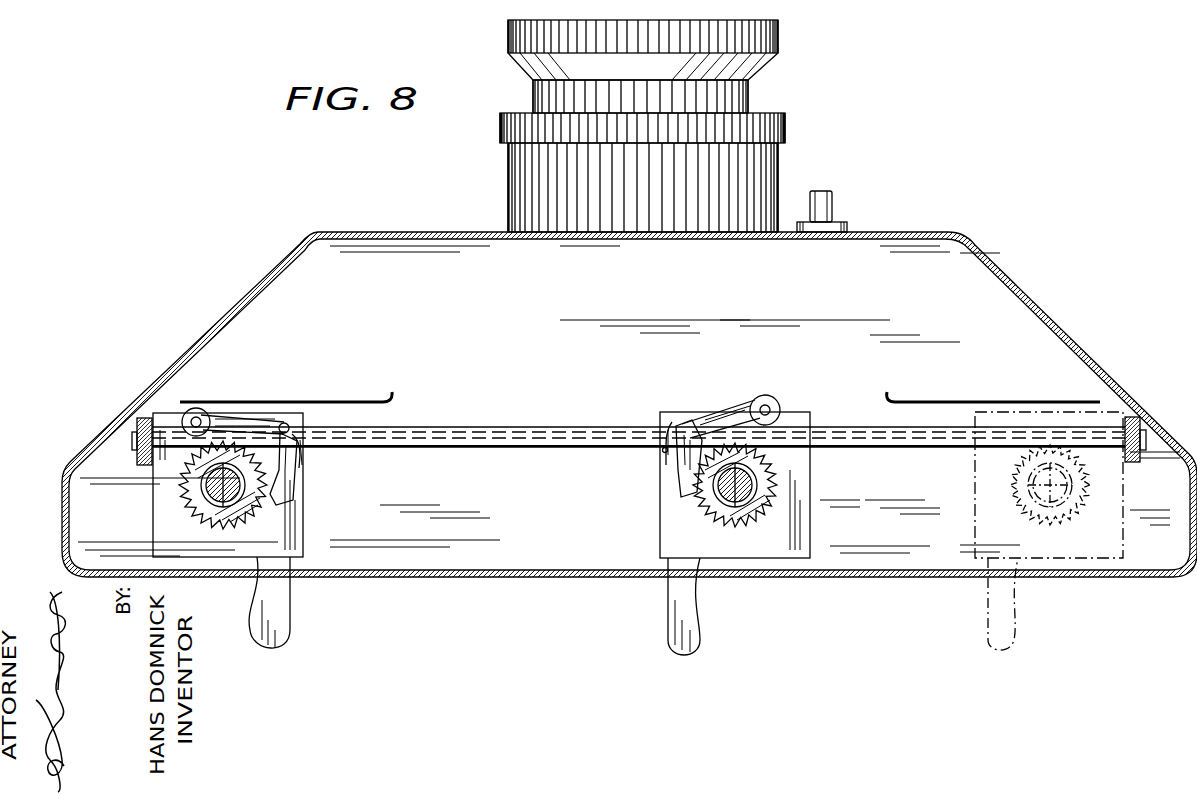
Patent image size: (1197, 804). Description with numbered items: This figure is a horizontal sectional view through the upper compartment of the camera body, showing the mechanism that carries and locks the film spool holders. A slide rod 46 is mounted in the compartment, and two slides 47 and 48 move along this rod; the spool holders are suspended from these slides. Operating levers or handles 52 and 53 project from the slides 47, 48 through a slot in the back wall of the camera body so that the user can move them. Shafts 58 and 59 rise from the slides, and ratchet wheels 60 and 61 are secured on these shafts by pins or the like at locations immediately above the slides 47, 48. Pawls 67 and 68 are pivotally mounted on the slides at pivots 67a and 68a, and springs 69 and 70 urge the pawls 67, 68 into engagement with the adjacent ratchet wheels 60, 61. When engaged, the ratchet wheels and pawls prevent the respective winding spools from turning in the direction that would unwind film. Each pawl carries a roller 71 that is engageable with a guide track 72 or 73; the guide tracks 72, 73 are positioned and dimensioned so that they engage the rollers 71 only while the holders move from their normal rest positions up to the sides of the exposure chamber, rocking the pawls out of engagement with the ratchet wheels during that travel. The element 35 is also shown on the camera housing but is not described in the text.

The camera housing knob 35 is at (868, 232).
The slide rod 46 is at (536, 431).
The slide 47 is at (300, 538).
The slide 48 is at (668, 529).
The operating lever 52 is at (286, 607).
The operating lever 53 is at (690, 611).
The shaft 58 is at (204, 503).
The shaft 59 is at (722, 511).
The ratchet wheel 60 is at (272, 500).
The ratchet wheel 61 is at (762, 506).
The pawl 67 is at (300, 480).
The pivot of pawl 67a is at (297, 432).
The pawl 68 is at (680, 481).
The pivot of pawl 68a is at (670, 425).
The spring 69 is at (284, 423).
The spring 70 is at (708, 422).
The roller 71 is at (206, 410).
The guide track 72 is at (368, 401).
The guide track 73 is at (993, 389).